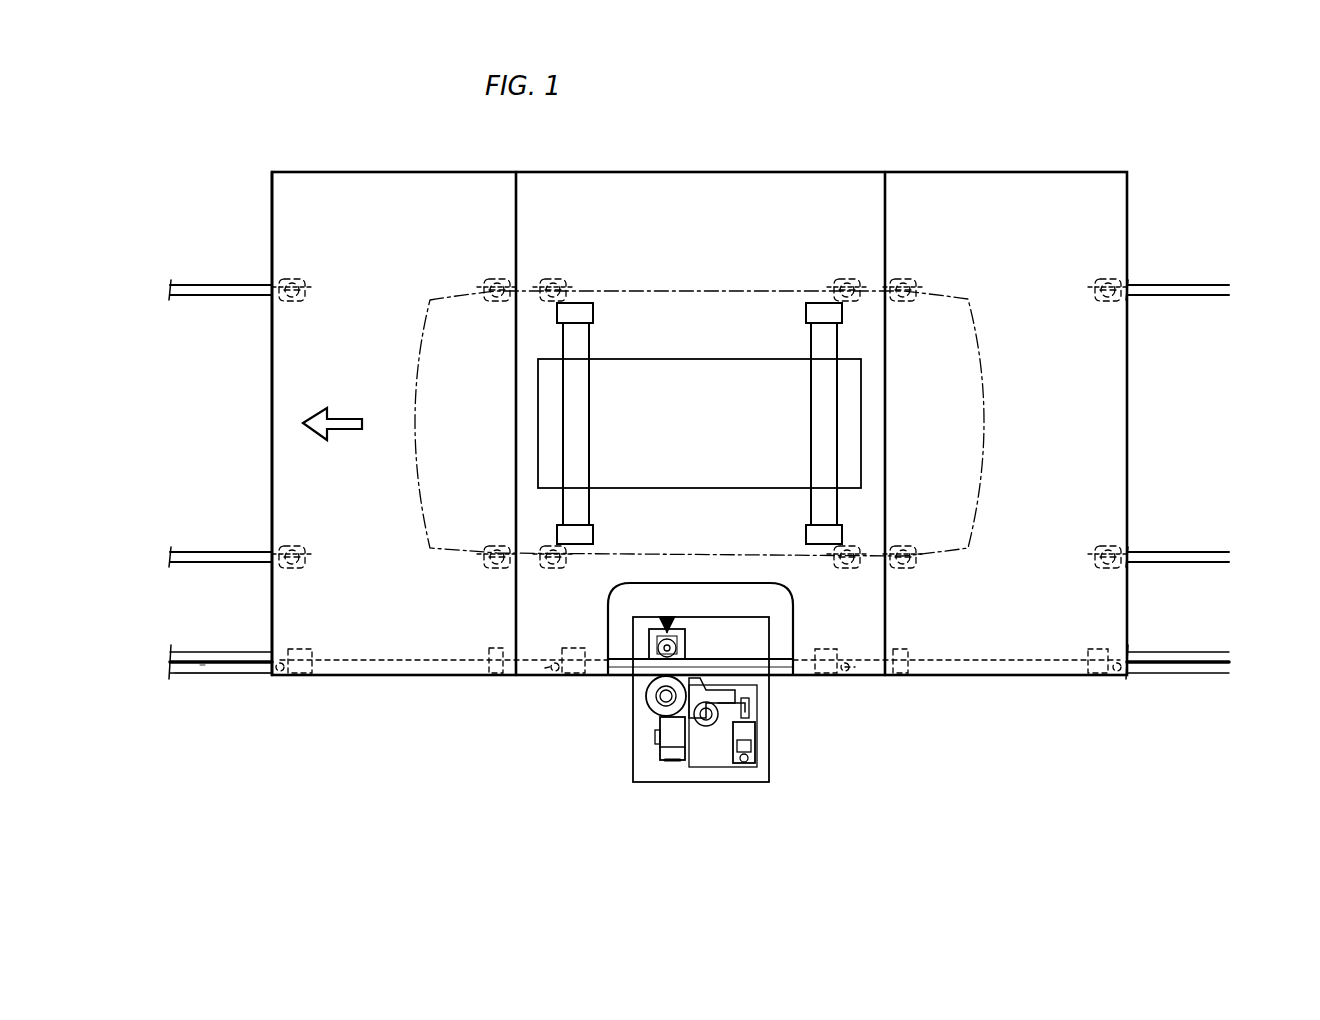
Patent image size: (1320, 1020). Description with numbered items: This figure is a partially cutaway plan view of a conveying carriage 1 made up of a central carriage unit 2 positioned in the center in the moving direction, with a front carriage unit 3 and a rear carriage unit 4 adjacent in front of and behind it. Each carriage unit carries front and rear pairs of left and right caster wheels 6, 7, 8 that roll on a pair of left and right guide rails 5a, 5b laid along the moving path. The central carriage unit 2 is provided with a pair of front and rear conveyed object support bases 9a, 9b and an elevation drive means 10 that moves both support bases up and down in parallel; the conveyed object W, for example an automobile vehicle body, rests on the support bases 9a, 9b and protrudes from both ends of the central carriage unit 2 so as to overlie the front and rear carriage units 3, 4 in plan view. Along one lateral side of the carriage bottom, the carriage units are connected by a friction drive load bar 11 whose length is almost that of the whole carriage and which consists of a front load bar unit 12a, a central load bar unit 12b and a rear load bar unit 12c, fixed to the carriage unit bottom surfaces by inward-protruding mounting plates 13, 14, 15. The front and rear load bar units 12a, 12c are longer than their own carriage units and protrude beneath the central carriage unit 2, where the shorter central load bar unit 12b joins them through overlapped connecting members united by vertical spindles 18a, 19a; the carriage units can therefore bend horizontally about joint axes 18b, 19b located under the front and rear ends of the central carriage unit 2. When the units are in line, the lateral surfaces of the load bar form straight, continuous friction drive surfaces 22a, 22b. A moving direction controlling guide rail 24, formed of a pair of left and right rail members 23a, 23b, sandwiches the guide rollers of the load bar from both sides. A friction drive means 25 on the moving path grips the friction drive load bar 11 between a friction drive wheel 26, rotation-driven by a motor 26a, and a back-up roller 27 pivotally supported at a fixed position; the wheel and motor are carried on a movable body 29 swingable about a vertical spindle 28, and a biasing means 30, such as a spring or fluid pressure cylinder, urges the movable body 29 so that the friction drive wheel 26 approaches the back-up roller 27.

The conveying carriage 1 is at (770, 172).
The central carriage unit 2 is at (717, 250).
The front carriage unit 3 is at (408, 252).
The rear carriage unit 4 is at (1011, 250).
The guide rail 5a is at (200, 560).
The guide rail 5b is at (200, 293).
The caster wheel 6 is at (563, 278).
The caster wheel 7 is at (300, 298).
The caster wheel 8 is at (910, 280).
The conveyed object support base 9a is at (578, 416).
The conveyed object support base 9b is at (822, 415).
The elevation drive means 10 is at (712, 375).
The friction drive load bar 11 is at (750, 655).
The front load bar unit 12a is at (398, 666).
The central load bar unit 12b is at (710, 664).
The rear load bar unit 12c is at (1012, 667).
The mounting plate 13 is at (300, 650).
The mounting plate 14 is at (578, 650).
The mounting plate 15 is at (902, 650).
The vertical spindle 18a is at (552, 668).
The joint axis 18b is at (556, 666).
The vertical spindle 19a is at (856, 668).
The joint axis 19b is at (846, 670).
The friction drive surface 22a is at (645, 690).
The friction drive surface 22b is at (698, 660).
The rail member 23a is at (188, 672).
The rail member 23b is at (195, 660).
The moving direction controlling guide rail 24 is at (165, 667).
The friction drive means 25 is at (690, 784).
The friction drive wheel 26 is at (655, 710).
The motor 26a is at (673, 760).
The back-up roller 27 is at (663, 645).
The vertical spindle 28 is at (705, 722).
The movable body 29 is at (718, 693).
The biasing means 30 is at (752, 740).
The conveyed object W is at (987, 410).